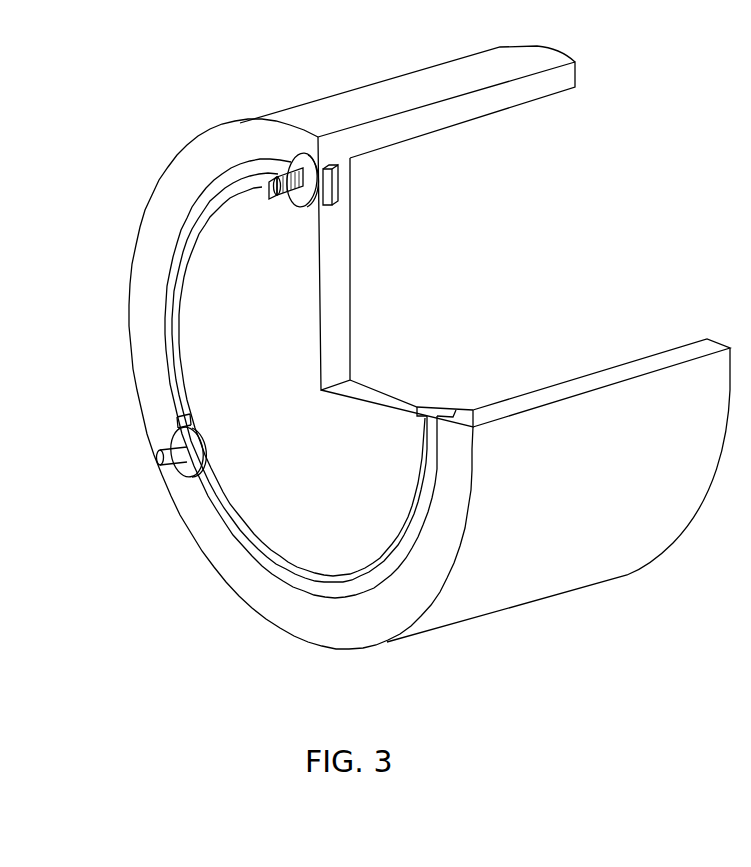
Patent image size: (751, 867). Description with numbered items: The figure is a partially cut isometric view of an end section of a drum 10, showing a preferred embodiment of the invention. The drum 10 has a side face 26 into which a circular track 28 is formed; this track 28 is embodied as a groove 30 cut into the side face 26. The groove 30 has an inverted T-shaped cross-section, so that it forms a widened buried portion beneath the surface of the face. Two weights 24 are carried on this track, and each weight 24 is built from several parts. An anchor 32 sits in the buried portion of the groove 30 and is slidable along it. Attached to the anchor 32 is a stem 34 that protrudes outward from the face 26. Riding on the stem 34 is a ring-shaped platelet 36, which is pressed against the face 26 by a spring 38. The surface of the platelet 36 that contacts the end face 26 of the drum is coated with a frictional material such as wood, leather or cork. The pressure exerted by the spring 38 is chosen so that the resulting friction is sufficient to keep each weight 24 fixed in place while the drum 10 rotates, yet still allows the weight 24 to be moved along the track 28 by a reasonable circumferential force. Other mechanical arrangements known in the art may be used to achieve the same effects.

The drum 10 is at (677, 343).
The weight 24 is at (158, 465).
The side face 26 is at (148, 288).
The circular track 28 is at (168, 393).
The groove 30 is at (448, 406).
The anchor 32 is at (331, 161).
The stem 34 is at (268, 176).
The ring-shaped platelet 36 is at (294, 153).
The spring 38 is at (287, 163).